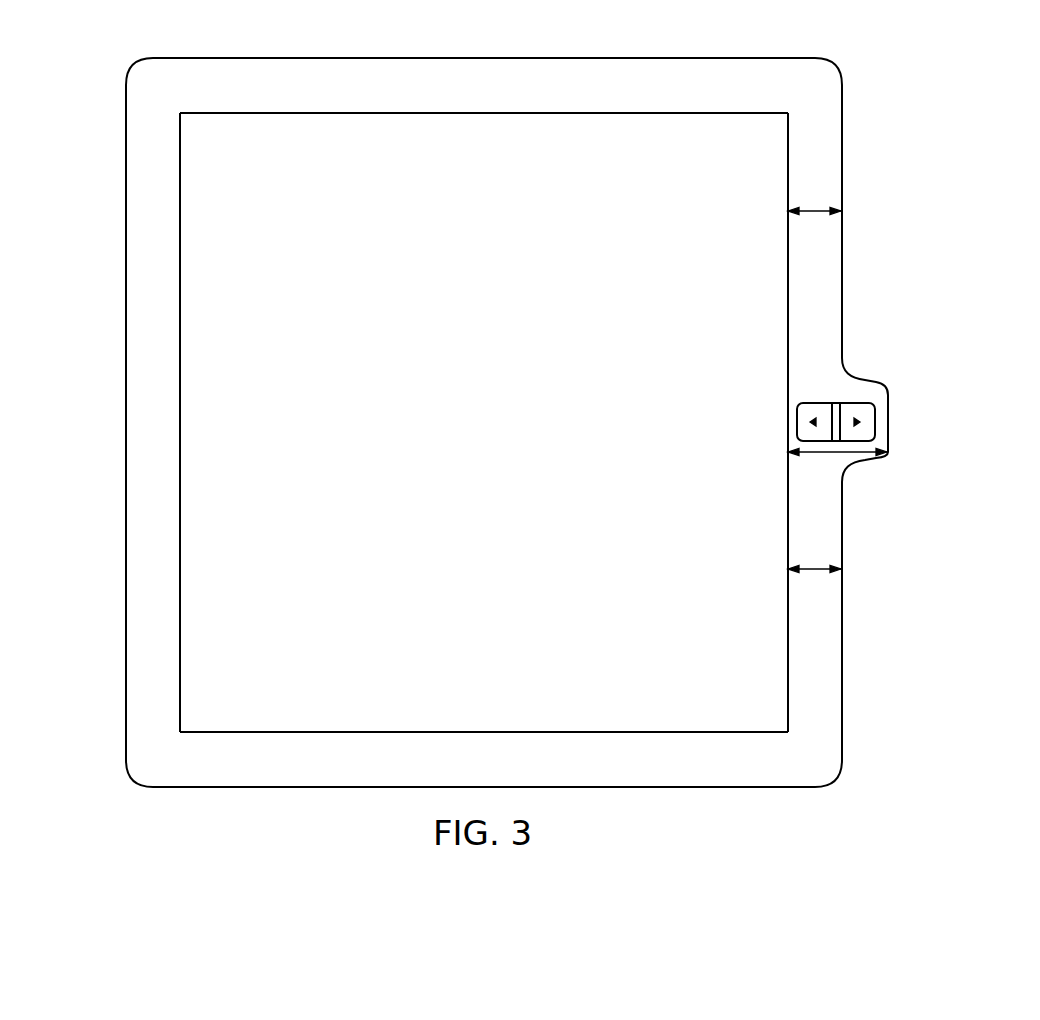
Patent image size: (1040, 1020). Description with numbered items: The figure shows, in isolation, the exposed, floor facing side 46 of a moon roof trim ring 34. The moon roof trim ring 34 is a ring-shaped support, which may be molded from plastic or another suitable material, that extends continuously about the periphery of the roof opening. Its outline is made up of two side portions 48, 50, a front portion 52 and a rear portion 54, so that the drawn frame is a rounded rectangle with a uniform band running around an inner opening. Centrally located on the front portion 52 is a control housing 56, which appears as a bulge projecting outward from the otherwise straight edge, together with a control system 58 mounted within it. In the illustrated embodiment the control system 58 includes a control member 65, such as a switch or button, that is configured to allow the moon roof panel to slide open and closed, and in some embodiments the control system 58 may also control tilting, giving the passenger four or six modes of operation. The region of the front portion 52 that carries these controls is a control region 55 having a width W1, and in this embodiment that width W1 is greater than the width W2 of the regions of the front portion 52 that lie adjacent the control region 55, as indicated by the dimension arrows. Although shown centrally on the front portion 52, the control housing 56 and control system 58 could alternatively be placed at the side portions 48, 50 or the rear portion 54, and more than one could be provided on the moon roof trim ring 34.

The moon roof trim ring 34 is at (915, 265).
The exposed, floor facing side 46 is at (828, 171).
The side portion 48 is at (314, 97).
The side portion 50 is at (311, 751).
The front portion 52 is at (820, 676).
The rear portion 54 is at (148, 363).
The control region 55 is at (915, 455).
The control housing 56 is at (910, 422).
The control system 58 is at (772, 419).
The control member 65 is at (850, 412).
The width of control region W1 is at (833, 458).
The width of adjacent regions W2 is at (813, 216).